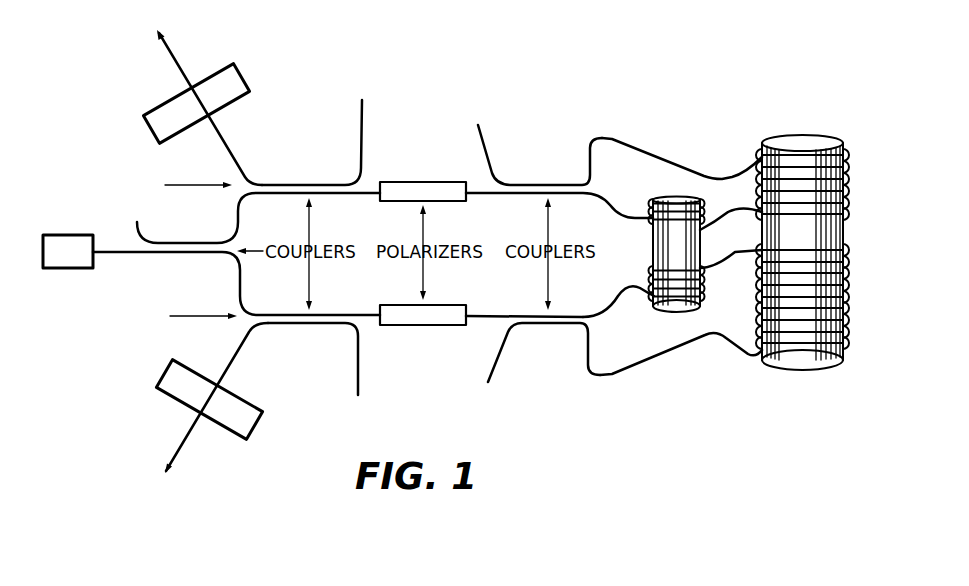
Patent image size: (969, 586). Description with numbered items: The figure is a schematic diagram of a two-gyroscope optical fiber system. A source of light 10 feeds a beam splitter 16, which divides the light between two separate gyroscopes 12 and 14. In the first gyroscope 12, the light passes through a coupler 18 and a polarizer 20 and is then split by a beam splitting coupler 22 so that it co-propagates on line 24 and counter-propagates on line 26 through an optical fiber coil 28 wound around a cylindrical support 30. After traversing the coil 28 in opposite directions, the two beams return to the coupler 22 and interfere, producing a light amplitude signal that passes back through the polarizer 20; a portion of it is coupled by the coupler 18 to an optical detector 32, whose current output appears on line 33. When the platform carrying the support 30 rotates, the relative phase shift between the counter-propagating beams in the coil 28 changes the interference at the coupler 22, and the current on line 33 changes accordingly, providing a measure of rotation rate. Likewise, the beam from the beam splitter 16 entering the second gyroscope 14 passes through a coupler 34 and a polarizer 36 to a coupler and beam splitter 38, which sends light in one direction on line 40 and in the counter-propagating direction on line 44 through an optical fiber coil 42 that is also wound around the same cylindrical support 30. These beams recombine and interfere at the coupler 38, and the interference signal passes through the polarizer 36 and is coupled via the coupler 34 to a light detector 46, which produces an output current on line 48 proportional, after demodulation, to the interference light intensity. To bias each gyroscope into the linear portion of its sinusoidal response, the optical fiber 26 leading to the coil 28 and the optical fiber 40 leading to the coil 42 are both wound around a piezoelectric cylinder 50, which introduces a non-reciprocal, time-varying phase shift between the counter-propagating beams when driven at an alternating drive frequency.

The source of light 10 is at (74, 235).
The gyroscope 12 is at (185, 186).
The gyroscope 14 is at (190, 317).
The beam splitter 16 is at (186, 243).
The coupler 18 is at (291, 183).
The polarizer 20 is at (416, 181).
The beam splitting coupler 22 is at (533, 184).
The line 24 is at (643, 153).
The line 26 is at (608, 202).
The optical fiber coil 28 is at (852, 187).
The cylindrical support 30 is at (792, 134).
The optical detector 32 is at (249, 80).
The line 33 is at (176, 62).
The coupler 34 is at (298, 326).
The polarizer 36 is at (416, 327).
The coupler and beam splitter 38 is at (540, 328).
The line 40 is at (623, 288).
The optical fiber coil 42 is at (847, 321).
The line 44 is at (637, 357).
The light detector 46 is at (263, 414).
The line 48 is at (176, 446).
The piezoelectric cylinder 50 is at (663, 318).